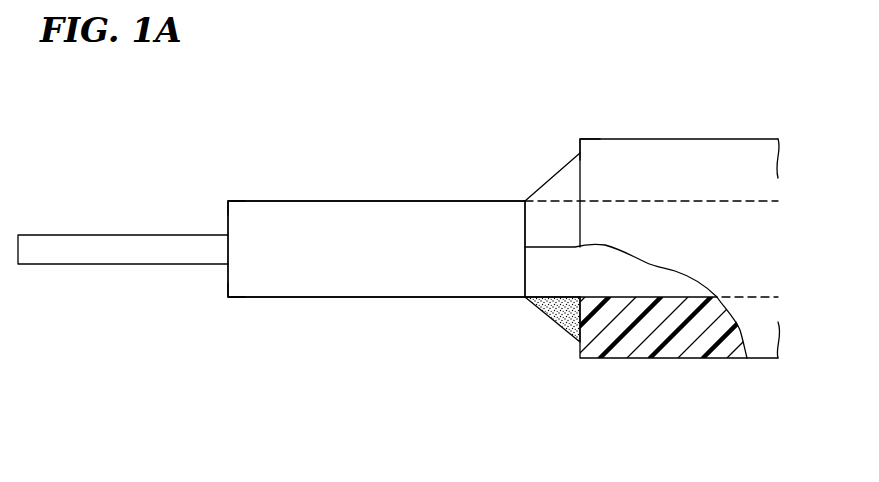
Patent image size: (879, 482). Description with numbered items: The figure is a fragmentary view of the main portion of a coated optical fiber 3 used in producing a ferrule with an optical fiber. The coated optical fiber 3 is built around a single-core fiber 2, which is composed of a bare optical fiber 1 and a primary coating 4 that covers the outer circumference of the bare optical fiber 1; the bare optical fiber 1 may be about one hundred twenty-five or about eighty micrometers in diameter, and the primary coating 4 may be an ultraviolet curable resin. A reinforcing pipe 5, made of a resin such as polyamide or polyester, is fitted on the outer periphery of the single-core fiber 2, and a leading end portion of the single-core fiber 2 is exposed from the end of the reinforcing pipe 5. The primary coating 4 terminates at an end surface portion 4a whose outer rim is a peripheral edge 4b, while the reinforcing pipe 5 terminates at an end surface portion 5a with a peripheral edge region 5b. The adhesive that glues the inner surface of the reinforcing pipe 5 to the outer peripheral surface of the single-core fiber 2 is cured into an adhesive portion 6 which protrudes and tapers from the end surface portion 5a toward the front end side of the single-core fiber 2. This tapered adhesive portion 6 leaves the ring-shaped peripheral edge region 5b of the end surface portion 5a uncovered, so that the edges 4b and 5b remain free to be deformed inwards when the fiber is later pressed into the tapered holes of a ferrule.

The bare optical fiber 1 is at (111, 233).
The single-core fiber 2 is at (380, 215).
The coated optical fiber 3 is at (675, 147).
The primary coating 4 is at (337, 297).
The end surface portion of the primary coating 4a is at (226, 281).
The peripheral edge of the end surface portion of the primary coating 4b is at (226, 200).
The reinforcing pipe 5 is at (669, 355).
The end surface portion of the reinforcing pipe 5a is at (580, 172).
The peripheral edge region of the end surface portion of the reinforcing pipe 5b is at (580, 139).
The adhesive portion 6 is at (557, 327).